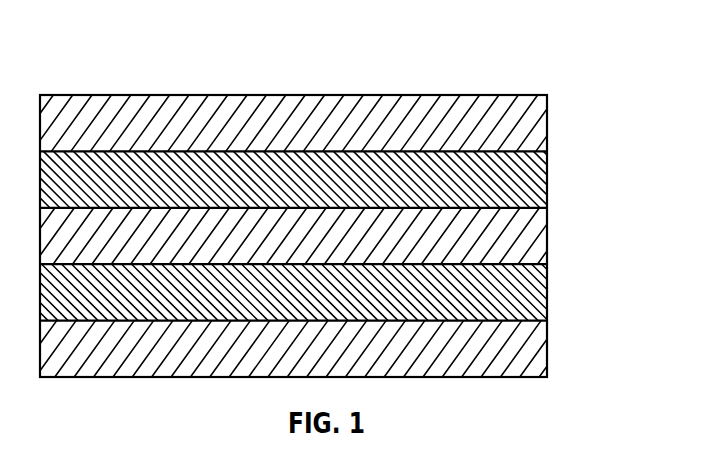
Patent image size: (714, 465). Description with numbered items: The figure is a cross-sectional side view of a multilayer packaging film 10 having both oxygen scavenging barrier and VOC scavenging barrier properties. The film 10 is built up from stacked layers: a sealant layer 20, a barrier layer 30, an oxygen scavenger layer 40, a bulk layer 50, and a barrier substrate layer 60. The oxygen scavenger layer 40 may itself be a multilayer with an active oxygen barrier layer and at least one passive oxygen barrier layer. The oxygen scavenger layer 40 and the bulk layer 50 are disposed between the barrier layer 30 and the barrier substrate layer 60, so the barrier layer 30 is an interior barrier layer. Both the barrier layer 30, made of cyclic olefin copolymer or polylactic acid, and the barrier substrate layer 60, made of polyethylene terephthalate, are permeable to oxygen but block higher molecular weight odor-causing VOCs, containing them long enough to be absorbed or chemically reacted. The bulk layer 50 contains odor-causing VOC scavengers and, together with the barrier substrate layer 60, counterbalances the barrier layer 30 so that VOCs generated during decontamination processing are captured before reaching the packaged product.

The film 10 is at (476, 68).
The sealant layer 20 is at (533, 347).
The barrier layer 30 is at (533, 293).
The oxygen scavenger layer 40 is at (535, 240).
The bulk layer 50 is at (535, 183).
The barrier substrate layer 60 is at (533, 127).